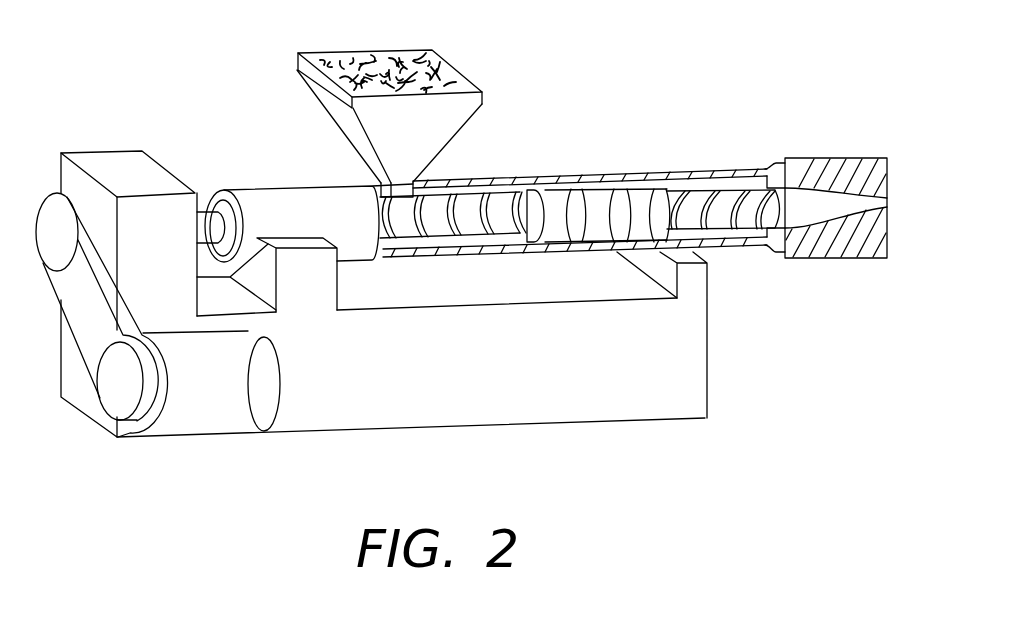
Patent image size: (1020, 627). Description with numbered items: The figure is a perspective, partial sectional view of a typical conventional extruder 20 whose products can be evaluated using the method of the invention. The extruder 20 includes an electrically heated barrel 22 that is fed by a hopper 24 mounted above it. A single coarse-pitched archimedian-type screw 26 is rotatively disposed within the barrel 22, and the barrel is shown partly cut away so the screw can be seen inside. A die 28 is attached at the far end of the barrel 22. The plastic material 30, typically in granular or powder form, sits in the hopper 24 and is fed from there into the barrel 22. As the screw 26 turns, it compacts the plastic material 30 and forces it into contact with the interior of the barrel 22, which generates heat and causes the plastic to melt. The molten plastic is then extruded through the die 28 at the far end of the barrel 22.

The extruder 20 is at (182, 88).
The barrel 22 is at (468, 178).
The hopper 24 is at (468, 104).
The screw 26 is at (633, 197).
The die 28 is at (842, 158).
The plastic material 30 is at (383, 52).